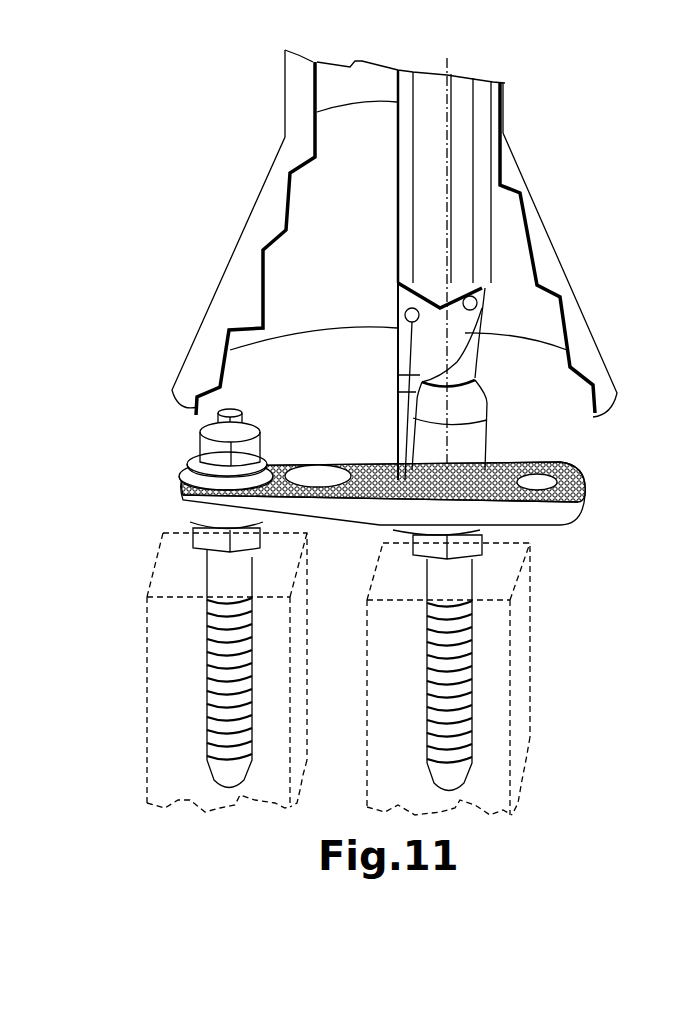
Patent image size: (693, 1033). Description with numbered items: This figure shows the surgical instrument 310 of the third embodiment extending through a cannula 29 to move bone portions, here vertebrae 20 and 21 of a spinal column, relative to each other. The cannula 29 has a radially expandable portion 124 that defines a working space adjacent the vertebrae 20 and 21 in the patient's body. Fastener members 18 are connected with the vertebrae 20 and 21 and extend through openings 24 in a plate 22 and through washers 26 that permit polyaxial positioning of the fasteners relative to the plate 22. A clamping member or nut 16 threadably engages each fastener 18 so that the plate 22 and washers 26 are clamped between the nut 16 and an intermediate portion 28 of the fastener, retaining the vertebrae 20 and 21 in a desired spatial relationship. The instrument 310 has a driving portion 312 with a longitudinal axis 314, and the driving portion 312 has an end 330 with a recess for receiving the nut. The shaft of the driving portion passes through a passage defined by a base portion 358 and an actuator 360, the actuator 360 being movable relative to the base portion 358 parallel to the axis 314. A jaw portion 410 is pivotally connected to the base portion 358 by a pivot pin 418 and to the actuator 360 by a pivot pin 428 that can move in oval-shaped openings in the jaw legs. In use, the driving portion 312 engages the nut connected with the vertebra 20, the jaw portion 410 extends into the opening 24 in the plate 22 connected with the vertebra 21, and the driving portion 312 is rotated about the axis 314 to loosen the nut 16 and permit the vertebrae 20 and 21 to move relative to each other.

The cannula 29 is at (297, 92).
The radially expandable portion 124 is at (236, 277).
The longitudinal axis 314 is at (446, 60).
The surgical instrument 310 is at (400, 122).
The base portion 358 is at (476, 162).
The actuator 360 is at (398, 222).
The pivot pin 428 is at (405, 312).
The pivot pin 418 is at (480, 318).
The jaw portion 410 is at (393, 394).
The driving portion 312 is at (492, 418).
The end 330 is at (467, 440).
The plate 22 is at (572, 495).
The openings 24 is at (300, 457).
The washers 26 is at (527, 468).
The clamping member 16 is at (212, 452).
The intermediate portions 28 is at (213, 538).
The fastener members 18 is at (210, 578).
The vertebra 21 is at (150, 760).
The vertebra 20 is at (517, 737).